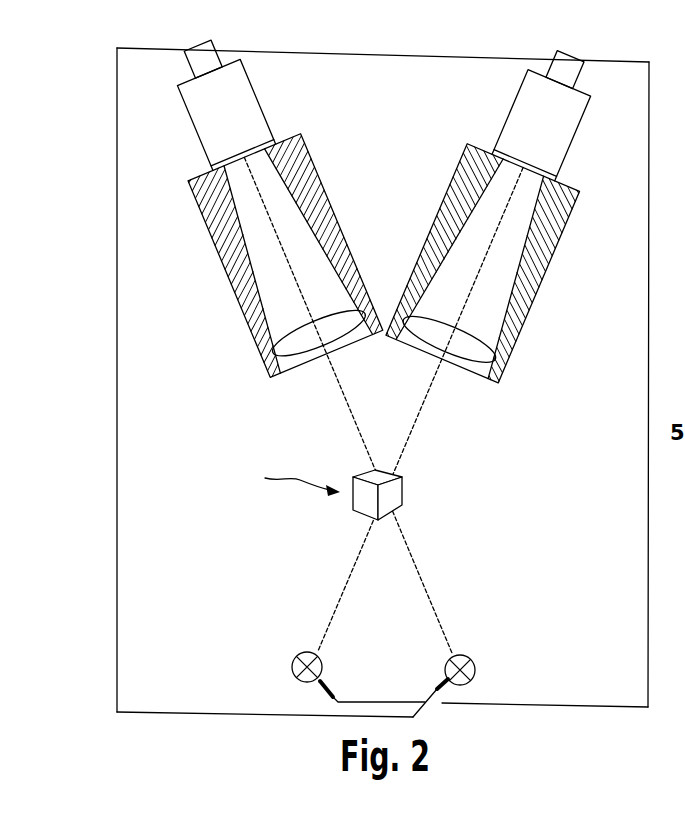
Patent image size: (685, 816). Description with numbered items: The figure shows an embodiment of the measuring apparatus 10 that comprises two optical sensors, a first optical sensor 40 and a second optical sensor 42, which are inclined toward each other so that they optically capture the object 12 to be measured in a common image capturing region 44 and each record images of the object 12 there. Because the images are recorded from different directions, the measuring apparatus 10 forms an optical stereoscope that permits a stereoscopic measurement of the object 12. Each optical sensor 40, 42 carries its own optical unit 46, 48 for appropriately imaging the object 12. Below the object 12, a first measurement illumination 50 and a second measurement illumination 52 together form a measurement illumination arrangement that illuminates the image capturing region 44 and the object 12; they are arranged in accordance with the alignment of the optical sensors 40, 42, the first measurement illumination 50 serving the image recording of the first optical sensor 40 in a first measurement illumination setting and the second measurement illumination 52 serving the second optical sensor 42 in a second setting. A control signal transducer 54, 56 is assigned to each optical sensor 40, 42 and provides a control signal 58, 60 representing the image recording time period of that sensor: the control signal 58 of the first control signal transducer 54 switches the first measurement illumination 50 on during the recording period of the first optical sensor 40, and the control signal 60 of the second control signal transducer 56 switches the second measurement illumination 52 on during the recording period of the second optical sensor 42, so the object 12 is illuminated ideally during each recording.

The measuring apparatus 10 is at (100, 100).
The object to be measured 12 is at (397, 492).
The first optical sensor 40 is at (207, 115).
The second optical sensor 42 is at (560, 122).
The image capturing region 44 is at (290, 482).
The optical unit 46 is at (243, 302).
The optical unit 48 is at (527, 312).
The first measurement illumination 50 is at (476, 670).
The second measurement illumination 52 is at (292, 667).
The first control signal transducer 54 is at (214, 48).
The second control signal transducer 56 is at (563, 62).
The control signal 58 is at (118, 408).
The control signal 60 is at (648, 418).